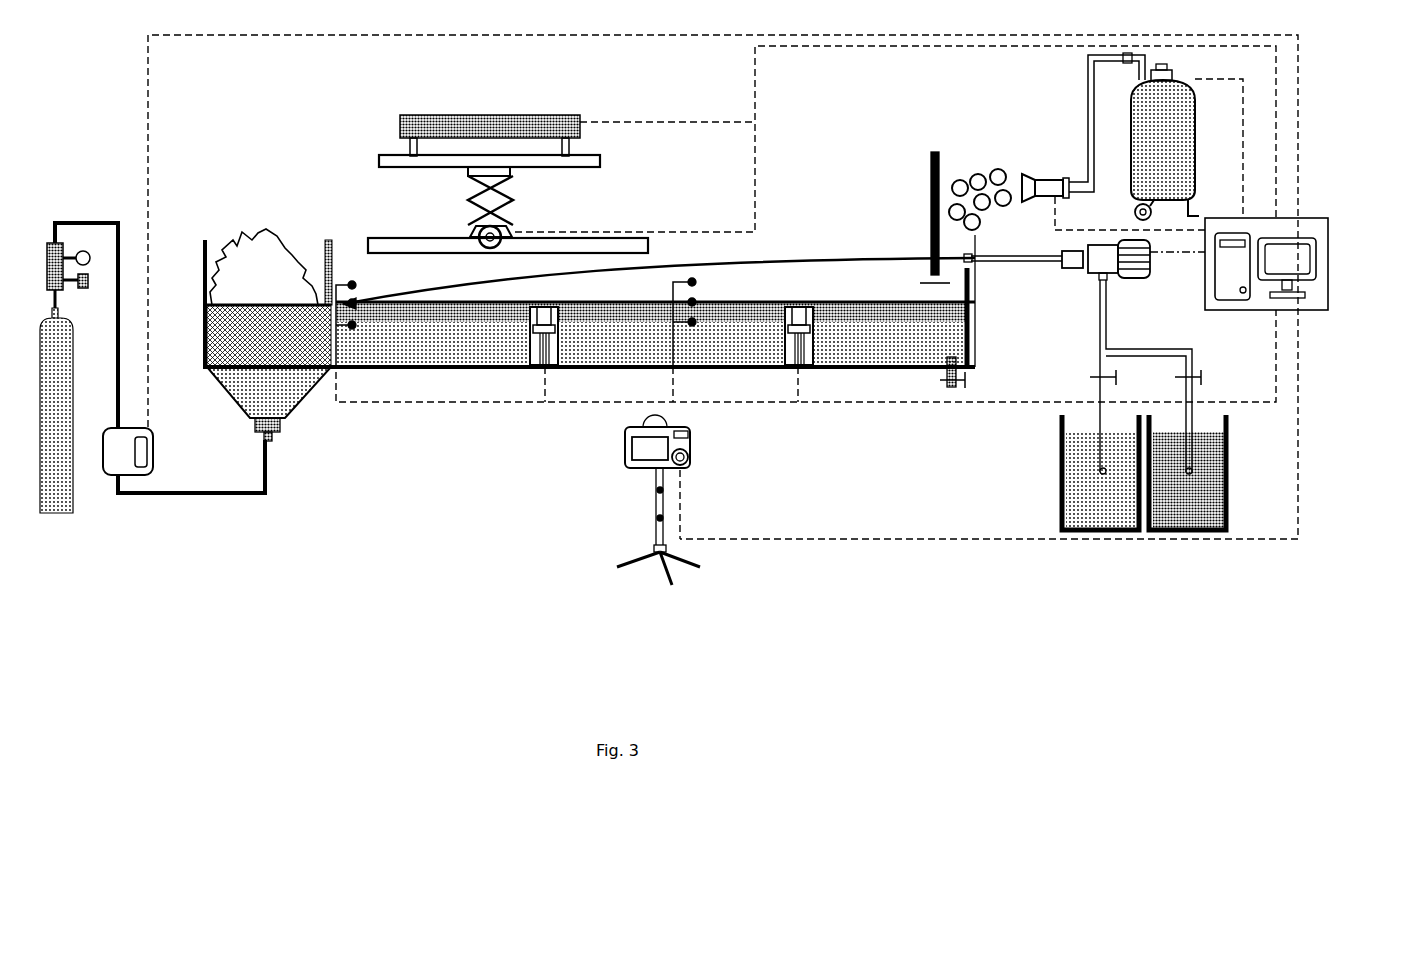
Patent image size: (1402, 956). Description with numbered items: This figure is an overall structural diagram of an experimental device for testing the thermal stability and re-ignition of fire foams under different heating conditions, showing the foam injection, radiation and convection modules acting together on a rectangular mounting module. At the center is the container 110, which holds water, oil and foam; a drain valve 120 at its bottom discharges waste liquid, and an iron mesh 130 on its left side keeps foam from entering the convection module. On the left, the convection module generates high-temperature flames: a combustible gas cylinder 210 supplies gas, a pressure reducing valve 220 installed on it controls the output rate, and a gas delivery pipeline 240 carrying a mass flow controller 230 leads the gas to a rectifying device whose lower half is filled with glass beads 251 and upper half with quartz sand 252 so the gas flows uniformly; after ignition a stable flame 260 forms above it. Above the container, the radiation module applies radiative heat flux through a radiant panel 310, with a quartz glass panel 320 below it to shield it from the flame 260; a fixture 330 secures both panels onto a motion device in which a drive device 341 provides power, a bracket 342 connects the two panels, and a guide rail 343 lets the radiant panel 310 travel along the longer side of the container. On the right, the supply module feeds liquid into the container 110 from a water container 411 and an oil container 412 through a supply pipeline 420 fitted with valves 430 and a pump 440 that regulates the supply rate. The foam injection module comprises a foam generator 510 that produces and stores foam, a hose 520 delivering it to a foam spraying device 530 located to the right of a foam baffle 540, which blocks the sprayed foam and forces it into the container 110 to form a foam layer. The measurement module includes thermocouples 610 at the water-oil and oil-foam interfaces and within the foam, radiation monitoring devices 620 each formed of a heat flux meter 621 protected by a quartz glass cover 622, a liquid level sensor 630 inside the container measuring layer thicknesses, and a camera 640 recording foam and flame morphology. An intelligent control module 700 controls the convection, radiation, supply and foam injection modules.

The container 110 is at (835, 363).
The drain valve 120 is at (950, 355).
The iron mesh 130 is at (326, 238).
The combustible gas cylinder 210 is at (73, 482).
The pressure reducing valve 220 is at (88, 282).
The mass flow controller 230 is at (153, 437).
The gas delivery pipeline 240 is at (267, 457).
The glass bead 251 is at (244, 418).
The quartz sand 252 is at (203, 330).
The flame 260 is at (249, 243).
The radiant panel 310 is at (422, 115).
The quartz glass panel 320 is at (396, 155).
The fixture 330 is at (468, 176).
The drive device 341 is at (470, 232).
The bracket 342 is at (513, 205).
The guide rail 343 is at (368, 245).
The water container 411 is at (1060, 472).
The oil container 412 is at (1228, 472).
The supply pipeline 420 is at (1098, 338).
The valves 430 is at (1203, 372).
The pump 440 is at (1133, 283).
The foam generator 510 is at (1196, 115).
The hose 520 is at (1088, 112).
The foam spraying device 530 is at (1044, 180).
The foam baffle 540 is at (930, 162).
The thermocouples 610 is at (692, 322).
The radiation monitoring devices 620 is at (649, 398).
The heat flux meter 621 is at (530, 333).
The quartz glass cover 622 is at (565, 338).
The liquid level sensor 630 is at (920, 283).
The camera 640 is at (645, 470).
The intelligent control module 700 is at (1328, 258).